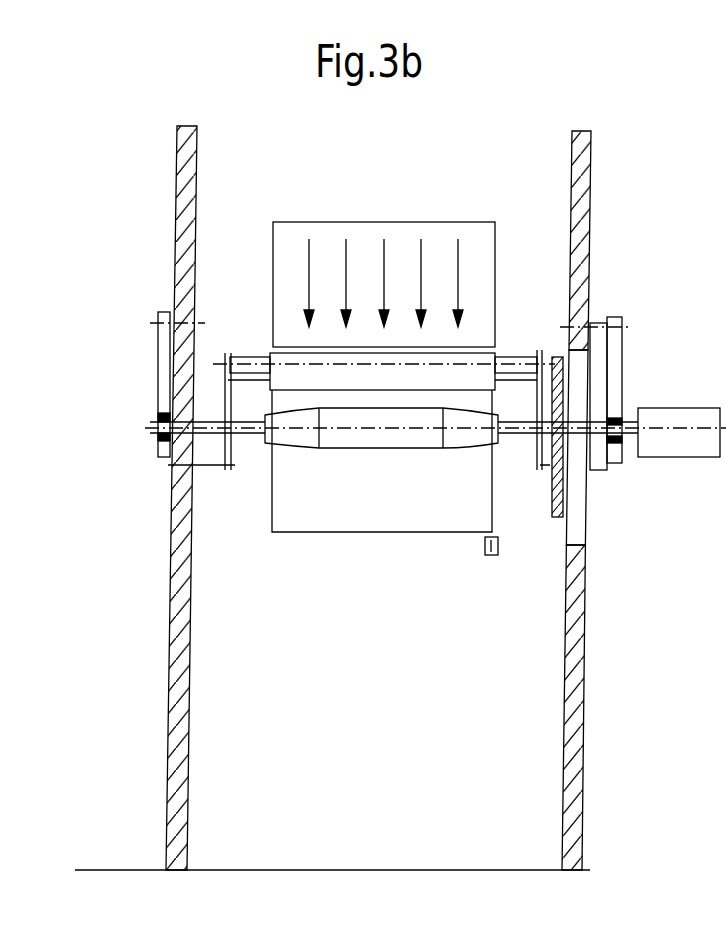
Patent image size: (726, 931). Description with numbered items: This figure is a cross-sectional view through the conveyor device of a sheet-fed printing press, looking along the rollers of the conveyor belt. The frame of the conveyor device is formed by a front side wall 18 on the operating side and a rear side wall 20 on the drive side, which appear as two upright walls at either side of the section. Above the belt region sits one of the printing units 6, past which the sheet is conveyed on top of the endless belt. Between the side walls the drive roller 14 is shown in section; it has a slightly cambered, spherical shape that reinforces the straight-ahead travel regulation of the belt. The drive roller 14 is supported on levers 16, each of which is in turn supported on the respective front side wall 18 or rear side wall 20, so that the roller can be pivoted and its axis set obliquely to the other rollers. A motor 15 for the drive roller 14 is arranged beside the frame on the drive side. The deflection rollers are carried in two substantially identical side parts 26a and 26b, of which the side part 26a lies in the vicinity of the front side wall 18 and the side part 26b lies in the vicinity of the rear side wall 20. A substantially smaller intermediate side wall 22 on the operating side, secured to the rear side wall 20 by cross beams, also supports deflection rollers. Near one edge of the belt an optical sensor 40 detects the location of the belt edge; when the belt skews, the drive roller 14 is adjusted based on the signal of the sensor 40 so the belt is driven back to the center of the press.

The rear side wall 20 is at (188, 162).
The front side wall 18 is at (582, 160).
The printing unit 6 is at (397, 240).
The side part 26b is at (225, 355).
The side part 26a is at (540, 357).
The intermediate side wall 22 is at (555, 518).
The lever 16 is at (160, 456).
The drive roller 14 is at (403, 438).
The motor 15 is at (657, 420).
The optical sensor 40 is at (488, 556).